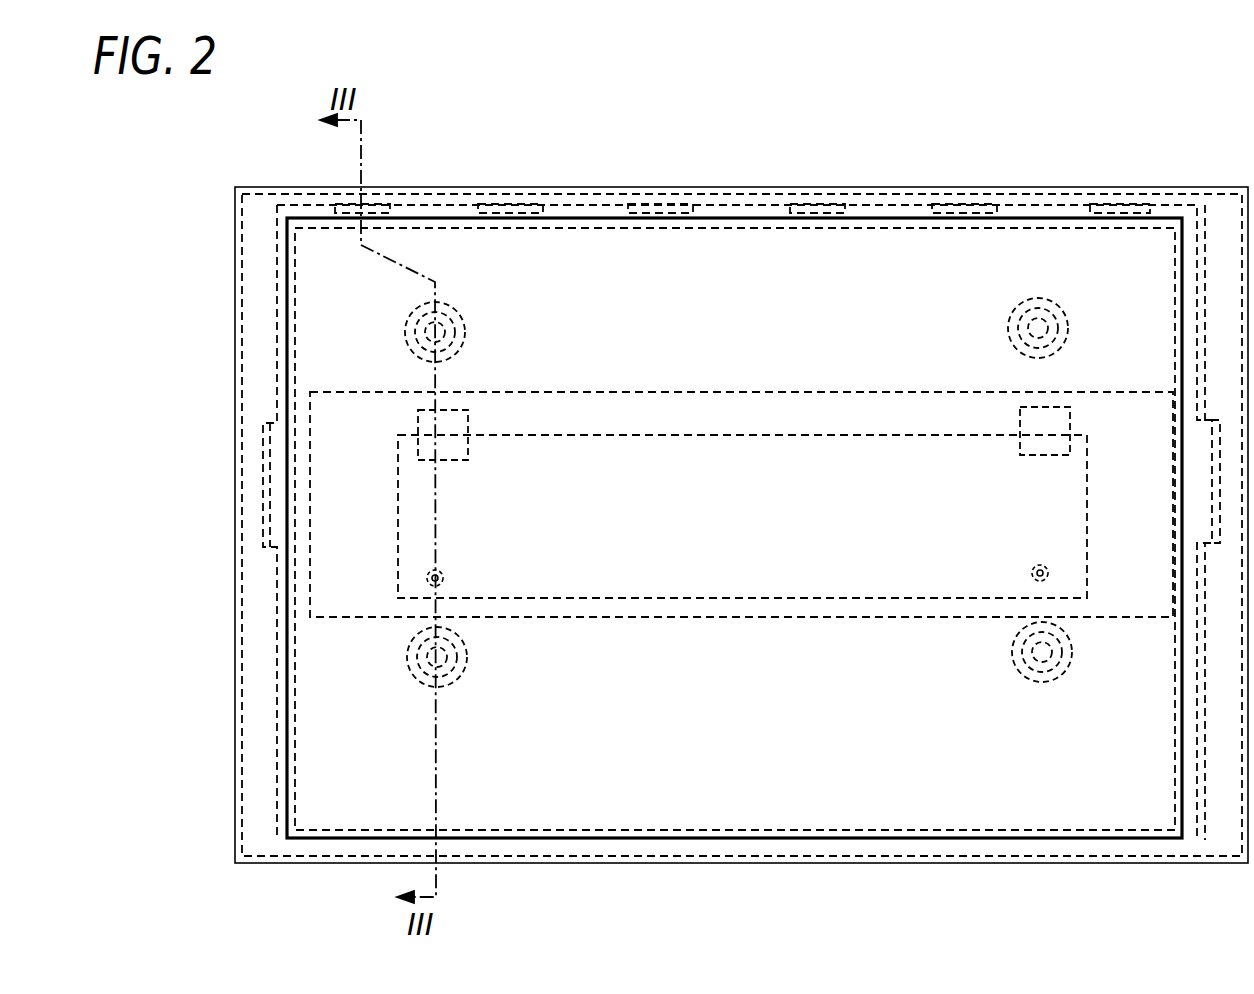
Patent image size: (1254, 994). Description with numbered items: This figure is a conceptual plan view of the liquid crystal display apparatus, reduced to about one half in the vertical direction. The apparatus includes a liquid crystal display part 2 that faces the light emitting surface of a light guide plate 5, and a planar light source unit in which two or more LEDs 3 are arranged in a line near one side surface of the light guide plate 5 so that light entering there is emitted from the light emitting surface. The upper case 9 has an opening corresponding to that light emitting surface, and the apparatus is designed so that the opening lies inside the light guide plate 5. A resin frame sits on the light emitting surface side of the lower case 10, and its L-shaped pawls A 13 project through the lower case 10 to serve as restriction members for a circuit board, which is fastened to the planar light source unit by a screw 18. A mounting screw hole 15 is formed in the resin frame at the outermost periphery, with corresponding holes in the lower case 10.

The liquid crystal display part 2 is at (1146, 839).
The LEDs 3 is at (340, 200).
The light guide plate 5 is at (982, 783).
The upper case 9 is at (878, 864).
The lower case 10 is at (698, 857).
The L-shaped pawls A 13 is at (468, 413).
The mounting screw hole 15 is at (458, 312).
The screw 18 is at (447, 579).